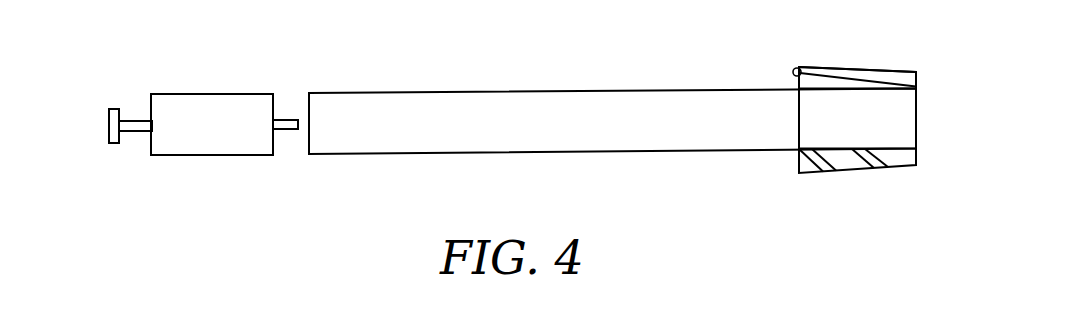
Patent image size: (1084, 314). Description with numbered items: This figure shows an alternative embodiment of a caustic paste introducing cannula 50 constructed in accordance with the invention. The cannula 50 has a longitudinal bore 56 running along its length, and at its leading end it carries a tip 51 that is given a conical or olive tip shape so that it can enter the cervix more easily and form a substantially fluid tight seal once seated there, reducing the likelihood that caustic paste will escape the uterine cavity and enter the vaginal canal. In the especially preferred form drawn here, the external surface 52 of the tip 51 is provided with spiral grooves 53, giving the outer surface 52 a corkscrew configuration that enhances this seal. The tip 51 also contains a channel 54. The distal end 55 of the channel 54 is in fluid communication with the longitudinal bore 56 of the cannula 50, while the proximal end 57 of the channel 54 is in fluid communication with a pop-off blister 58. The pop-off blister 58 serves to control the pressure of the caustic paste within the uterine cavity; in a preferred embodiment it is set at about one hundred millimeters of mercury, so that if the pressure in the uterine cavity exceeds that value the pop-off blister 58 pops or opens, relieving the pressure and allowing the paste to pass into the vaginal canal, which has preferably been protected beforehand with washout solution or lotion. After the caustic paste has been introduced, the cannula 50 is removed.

The caustic paste introducing cannula 50 is at (423, 80).
The tip 51 is at (916, 150).
The external surface 52 is at (852, 167).
The spiral grooves 53 is at (827, 172).
The channel 54 is at (840, 78).
The distal end 55 is at (862, 96).
The longitudinal bore 56 is at (836, 137).
The proximal end 57 is at (803, 74).
The pop-off blister 58 is at (794, 69).